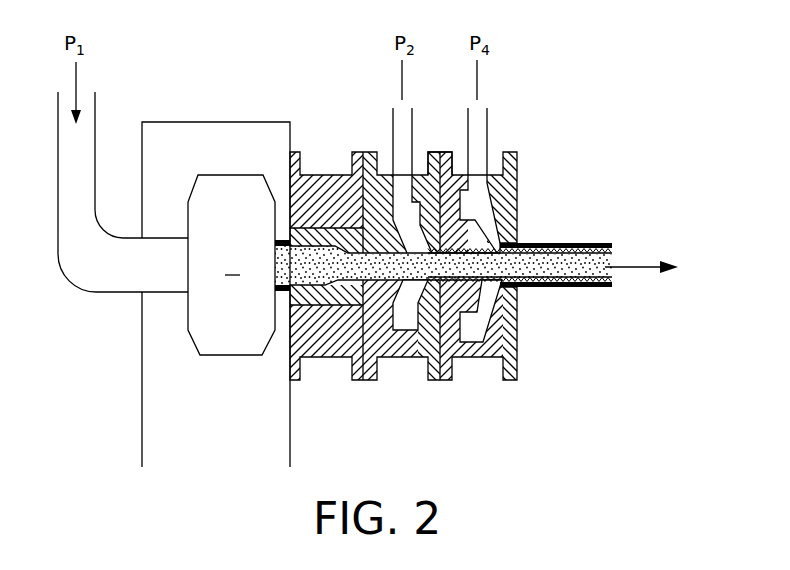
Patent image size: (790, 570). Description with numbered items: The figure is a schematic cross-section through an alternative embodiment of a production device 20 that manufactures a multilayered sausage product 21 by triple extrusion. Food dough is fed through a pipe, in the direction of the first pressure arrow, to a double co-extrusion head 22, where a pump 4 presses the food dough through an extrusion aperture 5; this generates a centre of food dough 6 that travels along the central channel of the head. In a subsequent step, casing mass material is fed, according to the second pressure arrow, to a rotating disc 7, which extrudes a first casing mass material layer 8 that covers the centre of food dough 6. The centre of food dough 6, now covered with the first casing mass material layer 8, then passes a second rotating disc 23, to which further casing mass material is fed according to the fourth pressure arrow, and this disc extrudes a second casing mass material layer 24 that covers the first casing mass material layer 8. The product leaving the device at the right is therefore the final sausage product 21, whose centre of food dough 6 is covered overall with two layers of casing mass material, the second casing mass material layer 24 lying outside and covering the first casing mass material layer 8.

The pump 4 is at (239, 265).
The extrusion aperture 5 is at (352, 287).
The centre of food dough 6 is at (318, 263).
The rotating disc 7 is at (435, 287).
The first casing mass material layer 8 is at (612, 250).
The production device 20 is at (597, 93).
The multilayered sausage product 21 is at (626, 222).
The double co-extrusion head 22 is at (422, 140).
The second rotating disc 23 is at (515, 287).
The second casing mass material layer 24 is at (588, 243).